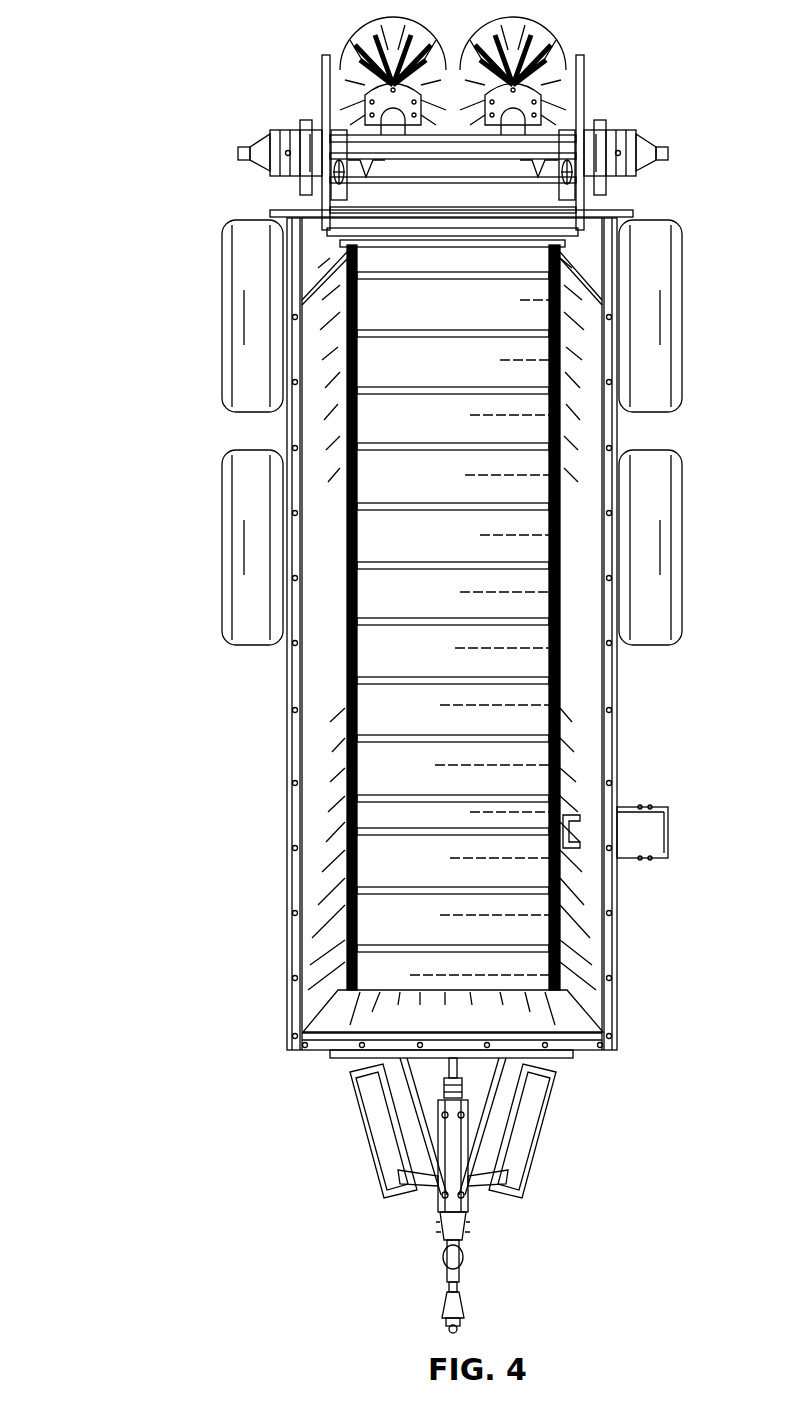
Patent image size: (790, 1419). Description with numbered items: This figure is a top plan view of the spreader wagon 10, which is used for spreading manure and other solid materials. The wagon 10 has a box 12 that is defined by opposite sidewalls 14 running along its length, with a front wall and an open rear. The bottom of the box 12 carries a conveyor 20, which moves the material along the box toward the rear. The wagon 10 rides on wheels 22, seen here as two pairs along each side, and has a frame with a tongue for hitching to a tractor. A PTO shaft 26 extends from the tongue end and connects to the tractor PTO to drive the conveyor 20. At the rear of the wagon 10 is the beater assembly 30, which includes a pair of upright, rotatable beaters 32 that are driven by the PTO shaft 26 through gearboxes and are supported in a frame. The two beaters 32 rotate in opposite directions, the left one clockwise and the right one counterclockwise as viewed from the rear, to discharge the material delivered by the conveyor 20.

The spreader wagon 10 is at (95, 37).
The box 12 is at (288, 900).
The sidewalls 14 is at (318, 835).
The conveyor 20 is at (355, 770).
The wheels 22 is at (228, 240).
The PTO shaft 26 is at (443, 1318).
The beater assembly 30 is at (287, 100).
The beaters 32 is at (347, 48).